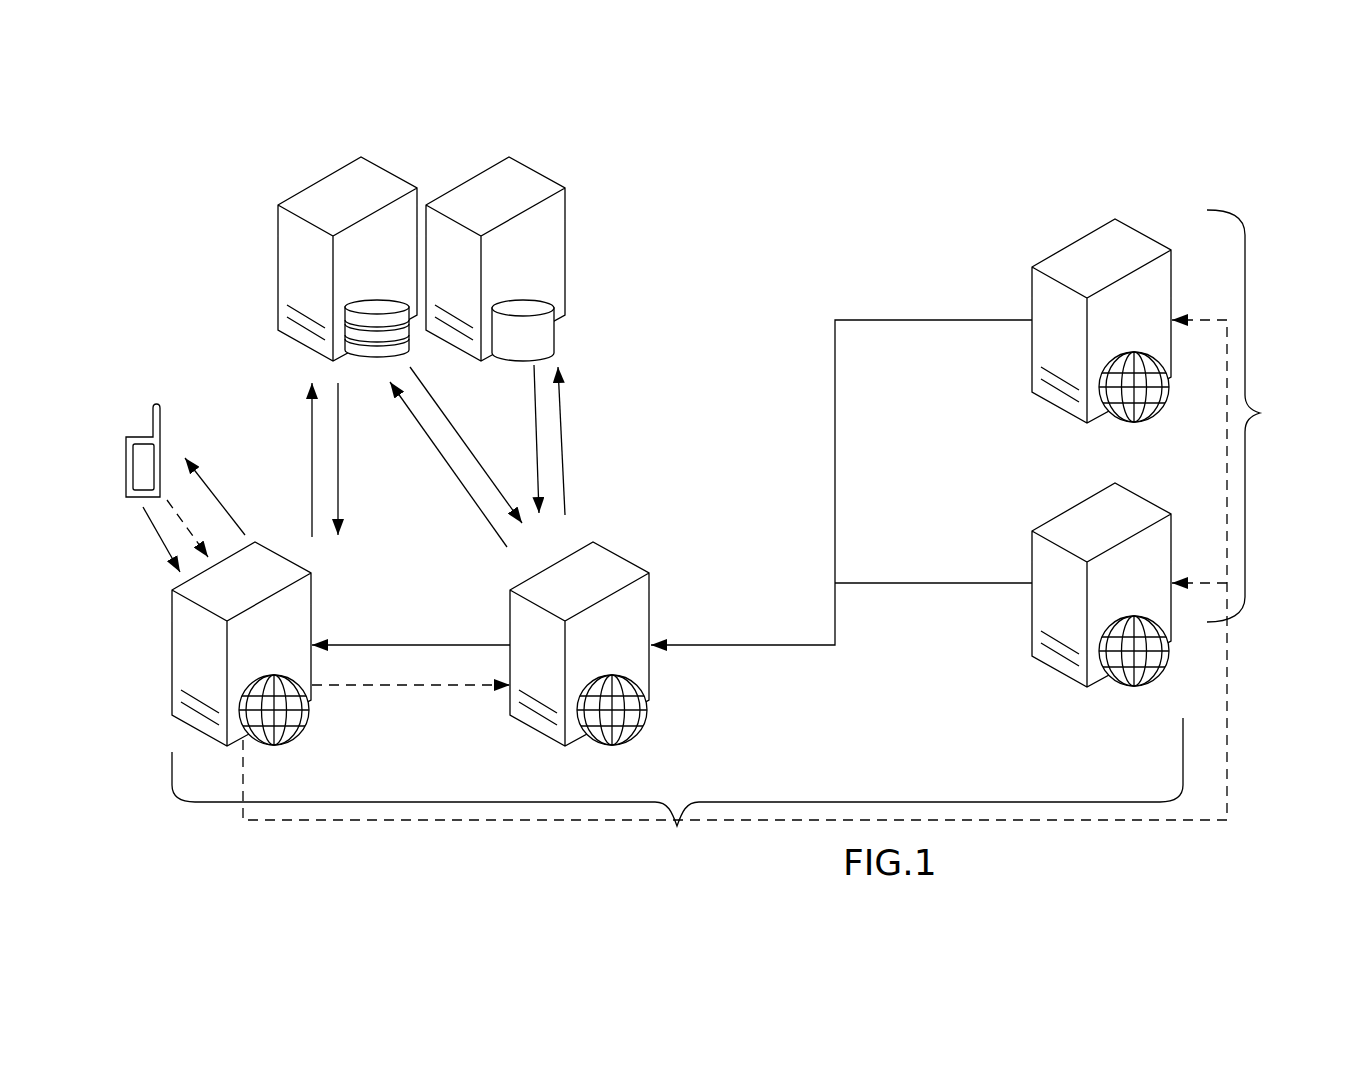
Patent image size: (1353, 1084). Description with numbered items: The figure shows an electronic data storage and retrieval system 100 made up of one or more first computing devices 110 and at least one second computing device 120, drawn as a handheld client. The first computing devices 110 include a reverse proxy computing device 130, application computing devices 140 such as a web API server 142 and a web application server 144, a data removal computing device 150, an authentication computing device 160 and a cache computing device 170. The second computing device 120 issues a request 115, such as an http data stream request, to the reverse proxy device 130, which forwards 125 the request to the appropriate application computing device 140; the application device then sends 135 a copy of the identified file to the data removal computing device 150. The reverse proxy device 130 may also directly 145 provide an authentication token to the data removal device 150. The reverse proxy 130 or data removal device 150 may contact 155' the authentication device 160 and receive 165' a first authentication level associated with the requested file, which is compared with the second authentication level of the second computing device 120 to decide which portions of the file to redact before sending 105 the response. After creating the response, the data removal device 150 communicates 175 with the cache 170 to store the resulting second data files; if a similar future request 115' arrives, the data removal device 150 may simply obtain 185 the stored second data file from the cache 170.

The electronic data storage and retrieval system 100 is at (727, 150).
The sending of the response 105 is at (215, 497).
The first computing devices 110 is at (677, 826).
The request 115 is at (129, 550).
The future request 115' is at (235, 496).
The second computing device 120 is at (157, 415).
The forward of the request 125 is at (548, 822).
The reverse proxy computing device 130 is at (172, 690).
The sending of the file copy 135 is at (887, 320).
The application computing devices 140 is at (1260, 416).
The web API server 142 is at (1128, 225).
The web application server 144 is at (1055, 665).
The direct provision of the authentication token 145 is at (428, 687).
The data removal computing device 150 is at (618, 557).
The contact with the authentication device 155' is at (257, 450).
The authentication computing device 160 is at (375, 165).
The receipt of the first authentication level 165' is at (282, 459).
The cache computing device 170 is at (565, 217).
The communication with the cache 175 is at (562, 407).
The obtaining from the cache 185 is at (538, 460).